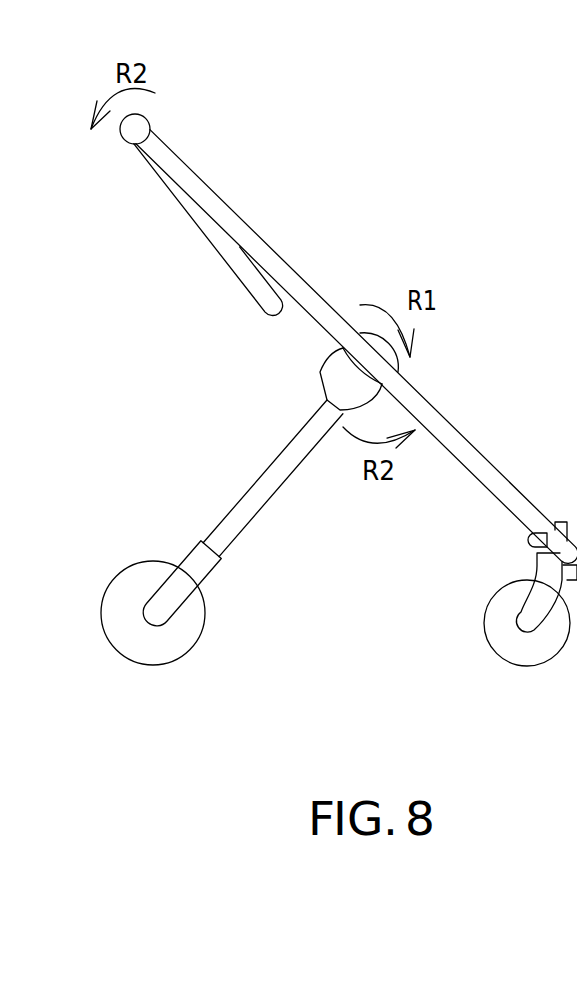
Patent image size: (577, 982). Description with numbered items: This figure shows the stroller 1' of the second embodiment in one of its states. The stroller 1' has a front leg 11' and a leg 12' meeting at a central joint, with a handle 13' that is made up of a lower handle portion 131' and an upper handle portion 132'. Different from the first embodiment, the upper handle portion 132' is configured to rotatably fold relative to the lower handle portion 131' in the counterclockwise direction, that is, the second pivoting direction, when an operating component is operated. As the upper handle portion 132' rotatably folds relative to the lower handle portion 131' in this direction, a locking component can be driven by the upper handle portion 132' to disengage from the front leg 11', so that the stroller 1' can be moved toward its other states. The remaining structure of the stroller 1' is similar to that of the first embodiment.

The stroller 1' is at (438, 242).
The front leg 11' is at (520, 510).
The front leg 12' is at (222, 532).
The handle assembly 13' is at (252, 91).
The lower handle portion 131' is at (356, 328).
The upper handle portion 132' is at (223, 204).